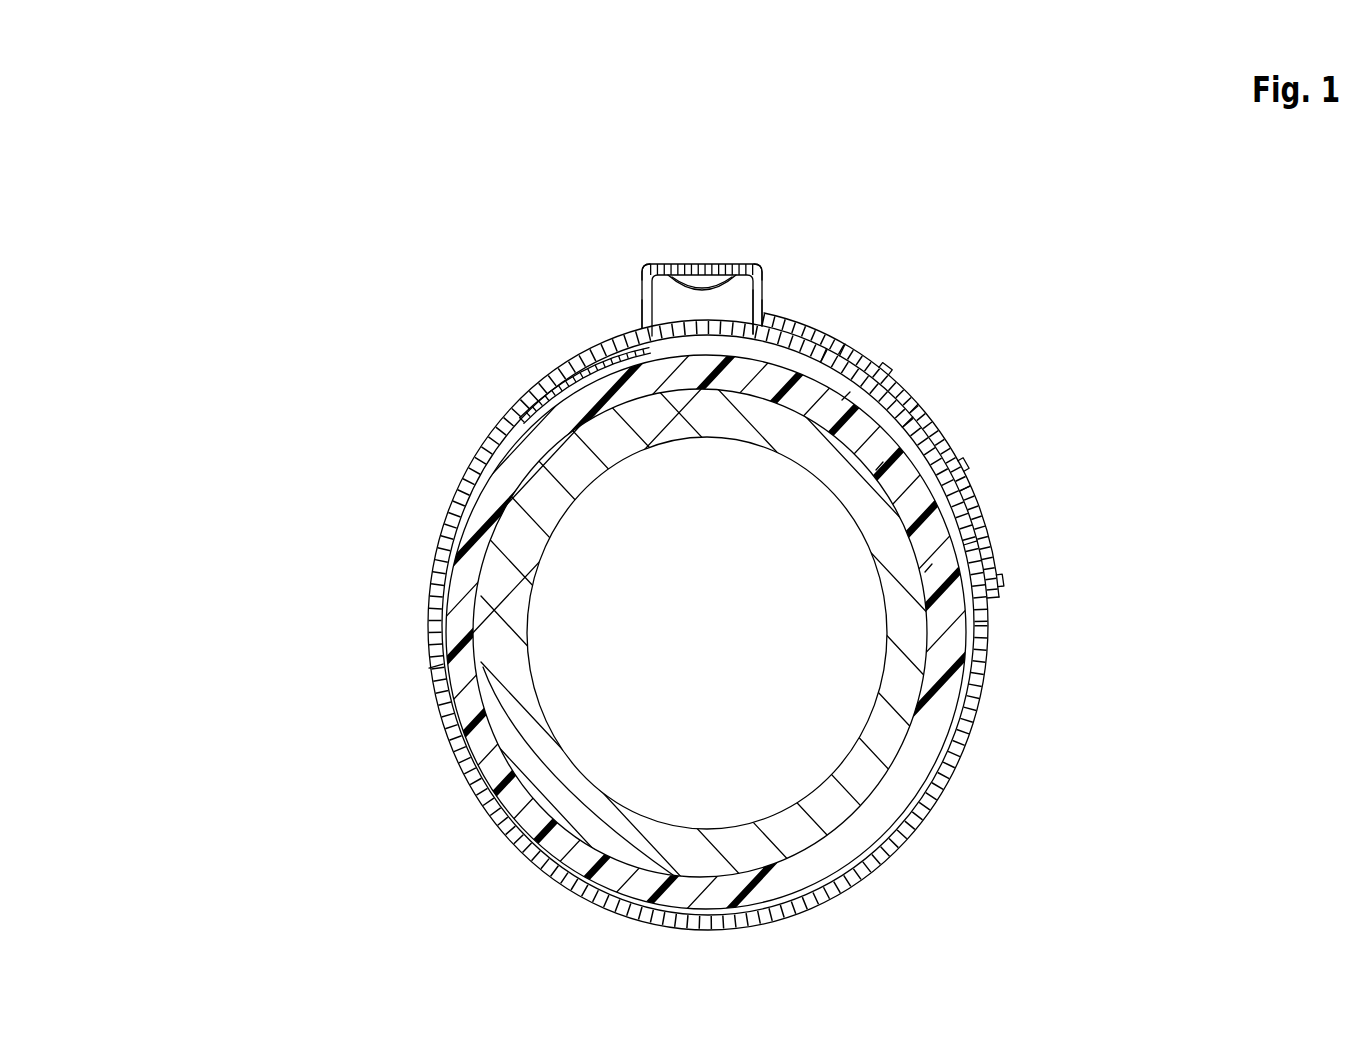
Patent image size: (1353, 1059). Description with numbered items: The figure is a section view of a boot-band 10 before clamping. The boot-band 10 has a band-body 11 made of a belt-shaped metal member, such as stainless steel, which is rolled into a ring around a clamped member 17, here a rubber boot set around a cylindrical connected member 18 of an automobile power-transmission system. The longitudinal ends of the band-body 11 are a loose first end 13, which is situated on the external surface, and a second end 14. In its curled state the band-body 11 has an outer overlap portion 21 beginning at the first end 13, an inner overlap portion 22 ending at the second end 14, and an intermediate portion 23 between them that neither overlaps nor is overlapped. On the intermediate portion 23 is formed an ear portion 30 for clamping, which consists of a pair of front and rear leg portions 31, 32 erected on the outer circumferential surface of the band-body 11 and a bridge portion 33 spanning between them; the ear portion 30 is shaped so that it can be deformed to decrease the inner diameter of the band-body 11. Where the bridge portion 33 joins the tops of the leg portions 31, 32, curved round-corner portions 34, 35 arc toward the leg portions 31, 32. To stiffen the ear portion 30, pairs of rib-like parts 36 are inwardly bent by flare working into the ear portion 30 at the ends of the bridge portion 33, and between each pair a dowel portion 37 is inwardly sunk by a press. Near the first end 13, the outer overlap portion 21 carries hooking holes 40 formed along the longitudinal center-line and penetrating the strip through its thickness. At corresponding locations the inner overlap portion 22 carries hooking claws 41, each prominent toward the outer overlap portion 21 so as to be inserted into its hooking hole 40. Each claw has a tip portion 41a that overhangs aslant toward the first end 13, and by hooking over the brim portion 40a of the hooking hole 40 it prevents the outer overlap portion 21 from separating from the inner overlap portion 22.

The boot-band 10 is at (412, 528).
The band-body 11 is at (953, 787).
The first end 13 is at (995, 600).
The second end 14 is at (515, 403).
The clamped member 17 is at (482, 693).
The connected member 18 is at (517, 608).
The outer overlap portion 21 is at (800, 318).
The inner overlap portion 22 is at (644, 345).
The intermediate portion 23 is at (437, 672).
The ear portion 30 is at (753, 265).
The leg portion 31 is at (766, 292).
The leg portion 32 is at (640, 304).
The bridge portion 33 is at (708, 262).
The curved portion 34 is at (760, 276).
The curved portion 35 is at (647, 263).
The rib-like part 36 is at (697, 278).
The dowel portion 37 is at (668, 258).
The hooking hole 40 is at (827, 337).
The brim portion 40a is at (847, 395).
The hooking claw 41 is at (860, 345).
The tip portion 41a is at (893, 362).